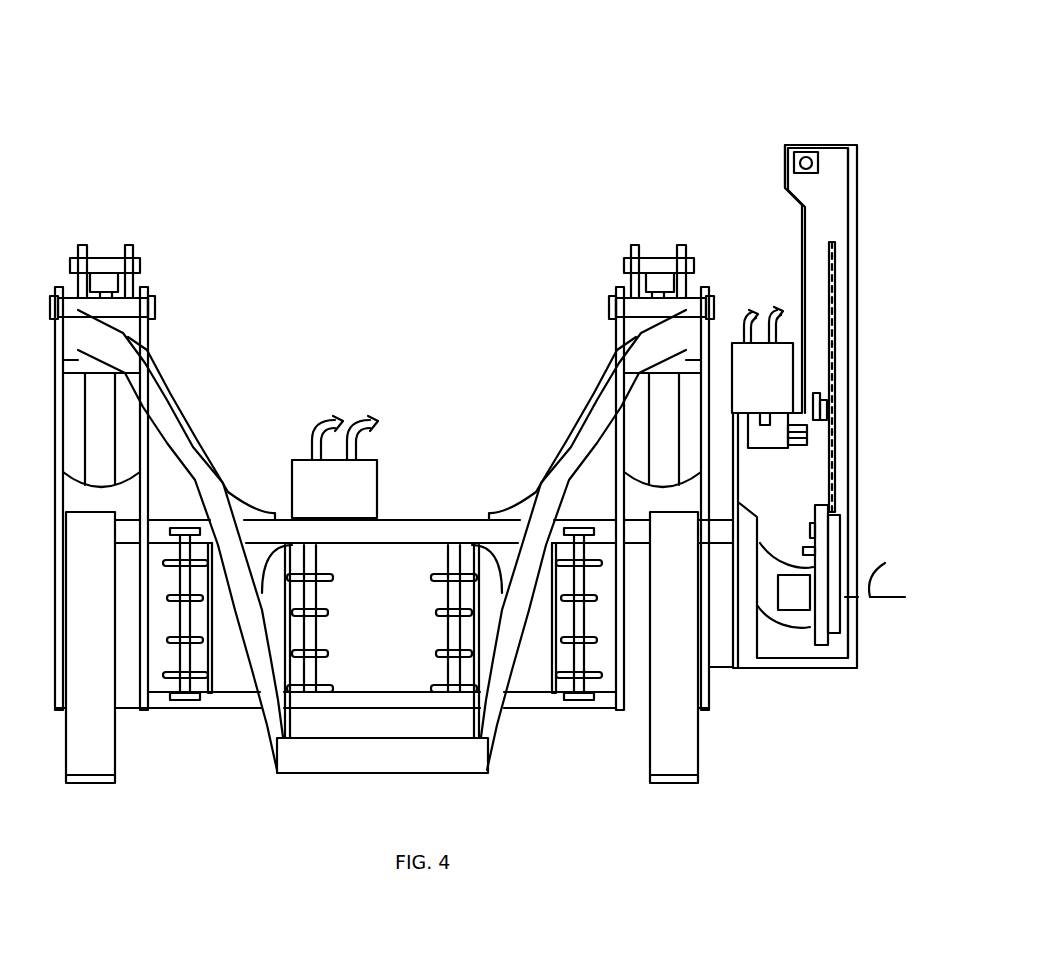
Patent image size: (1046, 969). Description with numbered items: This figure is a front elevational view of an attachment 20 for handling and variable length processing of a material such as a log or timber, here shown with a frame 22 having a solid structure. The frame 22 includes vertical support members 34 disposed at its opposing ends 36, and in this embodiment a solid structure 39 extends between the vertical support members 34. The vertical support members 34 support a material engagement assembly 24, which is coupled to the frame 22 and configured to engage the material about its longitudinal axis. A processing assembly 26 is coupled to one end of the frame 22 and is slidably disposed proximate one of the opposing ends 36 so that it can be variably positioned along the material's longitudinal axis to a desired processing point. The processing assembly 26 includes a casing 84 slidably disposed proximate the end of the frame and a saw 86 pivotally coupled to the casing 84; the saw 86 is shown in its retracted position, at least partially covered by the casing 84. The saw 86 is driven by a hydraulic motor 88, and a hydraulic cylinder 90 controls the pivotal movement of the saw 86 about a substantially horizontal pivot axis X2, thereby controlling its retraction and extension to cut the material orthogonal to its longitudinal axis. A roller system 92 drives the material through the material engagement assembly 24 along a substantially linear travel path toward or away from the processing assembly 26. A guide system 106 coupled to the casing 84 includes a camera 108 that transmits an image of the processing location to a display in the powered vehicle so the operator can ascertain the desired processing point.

The attachment 20 is at (132, 170).
The frame 22 is at (265, 527).
The material engagement assembly 24 is at (233, 738).
The processing assembly 26 is at (830, 207).
The vertical support members 34 is at (130, 687).
The opposing ends 36 is at (708, 647).
The solid structure 39 is at (377, 657).
The casing 84 is at (847, 277).
The saw 86 is at (835, 372).
The hydraulic motor 88 is at (797, 602).
The hydraulic cylinder 90 is at (815, 462).
The roller system 92 is at (573, 708).
The guide system 106 is at (785, 150).
The camera 108 is at (806, 150).
The pivot axis X2 is at (883, 570).